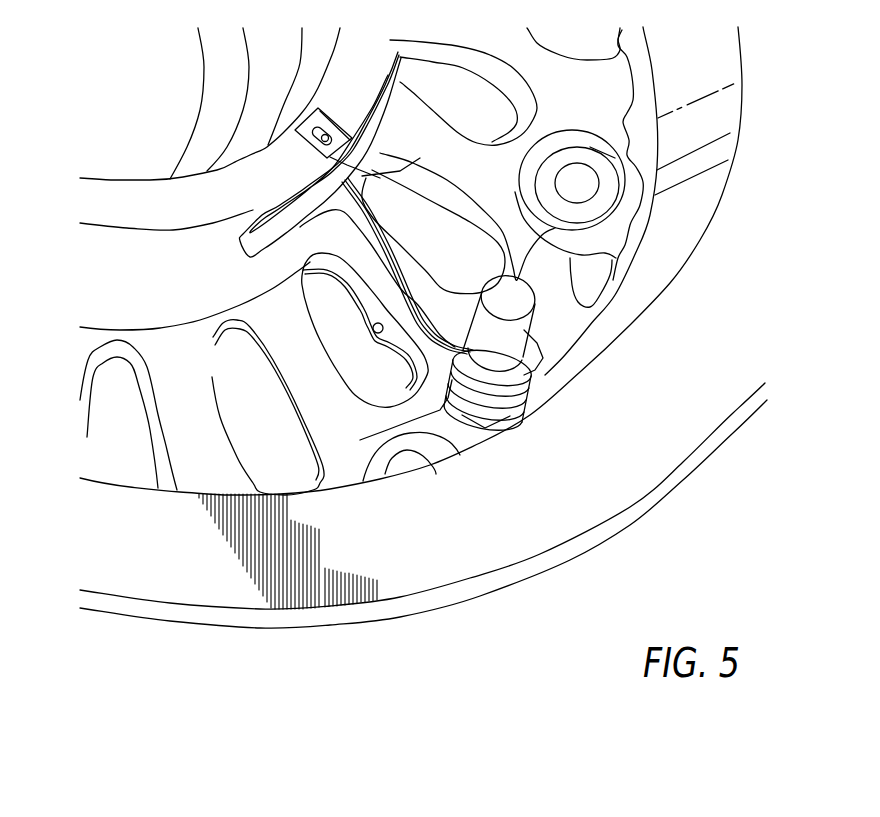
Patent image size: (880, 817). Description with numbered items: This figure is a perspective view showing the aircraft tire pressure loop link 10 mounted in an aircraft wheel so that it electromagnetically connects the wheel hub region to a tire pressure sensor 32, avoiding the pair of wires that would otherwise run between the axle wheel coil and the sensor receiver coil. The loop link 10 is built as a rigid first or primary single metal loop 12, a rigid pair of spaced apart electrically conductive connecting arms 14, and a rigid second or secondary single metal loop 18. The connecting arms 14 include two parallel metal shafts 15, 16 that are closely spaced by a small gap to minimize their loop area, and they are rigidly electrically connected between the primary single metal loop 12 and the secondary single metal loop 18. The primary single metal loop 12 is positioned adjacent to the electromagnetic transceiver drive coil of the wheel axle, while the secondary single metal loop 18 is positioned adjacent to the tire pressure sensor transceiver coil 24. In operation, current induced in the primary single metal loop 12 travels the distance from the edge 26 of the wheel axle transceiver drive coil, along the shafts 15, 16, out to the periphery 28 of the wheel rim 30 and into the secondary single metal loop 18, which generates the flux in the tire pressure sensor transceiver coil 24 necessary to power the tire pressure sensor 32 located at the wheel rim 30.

The aircraft tire pressure loop link 10 is at (365, 265).
The first or primary single metal loop 12 is at (392, 113).
The pair of spaced apart electrically conductive connecting arms 14 is at (410, 225).
The metal shaft 15 is at (410, 268).
The metal shaft 16 is at (410, 308).
The second or secondary single metal loop 18 is at (525, 372).
The tire pressure sensor transceiver coil 24 is at (476, 430).
The edge of the wheel axle transceiver drive coil 26 is at (300, 187).
The periphery of the wheel rim 28 is at (535, 420).
The wheel rim 30 is at (613, 493).
The tire pressure sensor 32 is at (515, 335).